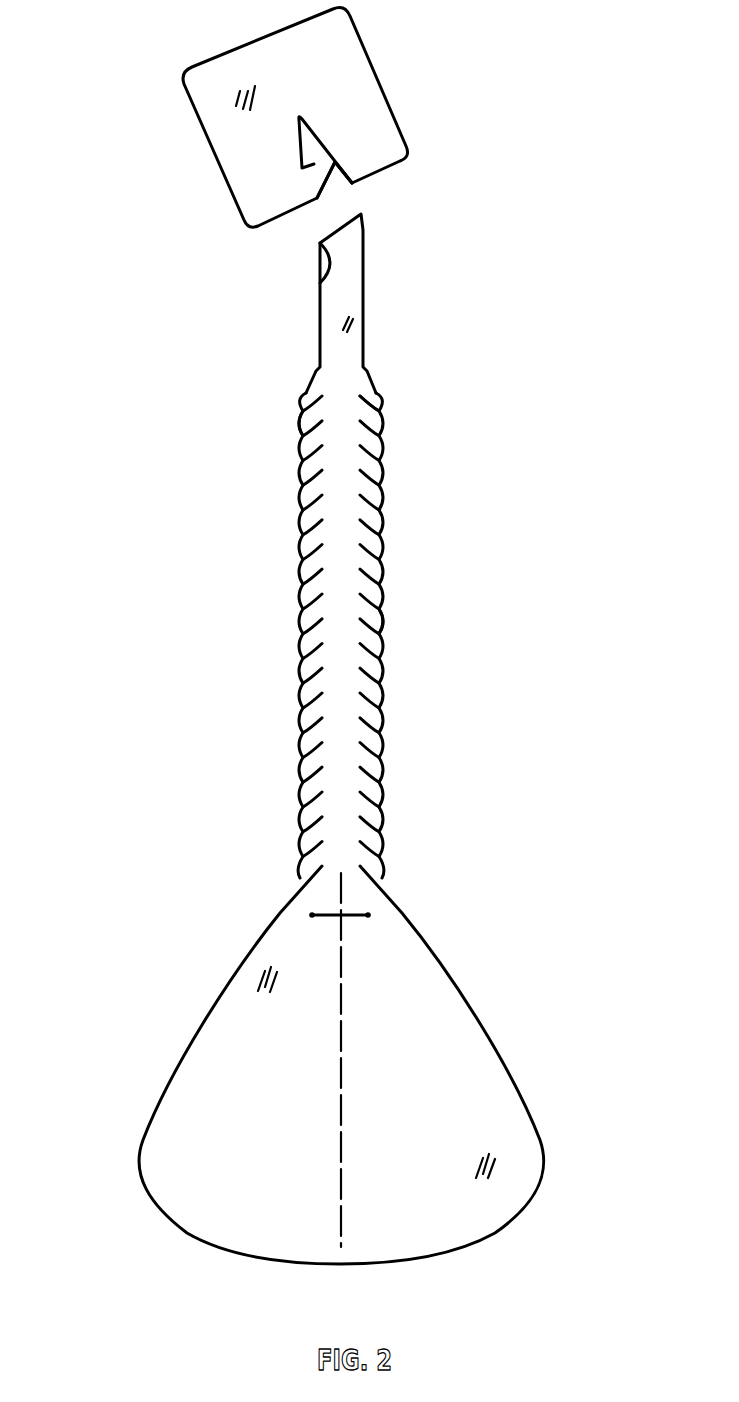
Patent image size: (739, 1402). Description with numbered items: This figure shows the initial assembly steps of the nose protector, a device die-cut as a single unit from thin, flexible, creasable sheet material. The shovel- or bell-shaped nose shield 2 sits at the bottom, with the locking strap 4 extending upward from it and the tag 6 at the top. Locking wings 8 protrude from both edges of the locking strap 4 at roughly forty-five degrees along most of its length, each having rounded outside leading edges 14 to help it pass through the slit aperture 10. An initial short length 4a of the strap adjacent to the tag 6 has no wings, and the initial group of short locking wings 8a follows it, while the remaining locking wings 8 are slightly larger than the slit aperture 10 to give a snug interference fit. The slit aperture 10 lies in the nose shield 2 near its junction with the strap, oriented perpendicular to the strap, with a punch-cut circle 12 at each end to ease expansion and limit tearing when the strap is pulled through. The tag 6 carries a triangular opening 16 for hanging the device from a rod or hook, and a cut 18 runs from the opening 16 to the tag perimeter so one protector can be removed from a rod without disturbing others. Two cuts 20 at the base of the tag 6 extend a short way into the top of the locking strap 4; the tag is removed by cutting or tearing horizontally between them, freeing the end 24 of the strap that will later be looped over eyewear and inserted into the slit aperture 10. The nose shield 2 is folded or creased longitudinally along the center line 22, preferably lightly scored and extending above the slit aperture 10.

The nose shield 2 is at (442, 1083).
The locking strap 4 is at (340, 517).
The initial short length 4a is at (342, 280).
The tag 6 is at (322, 73).
The locking wings 8 is at (380, 500).
The initial group of short locking wings 8a is at (372, 387).
The slit aperture 10 is at (330, 914).
The circle 12 is at (312, 915).
The rounded outside leading edges 14 is at (310, 398).
The opening 16 is at (308, 139).
The cut 18 is at (335, 162).
The cuts 20 is at (320, 290).
The center line 22 is at (342, 1037).
The end 24 is at (330, 224).